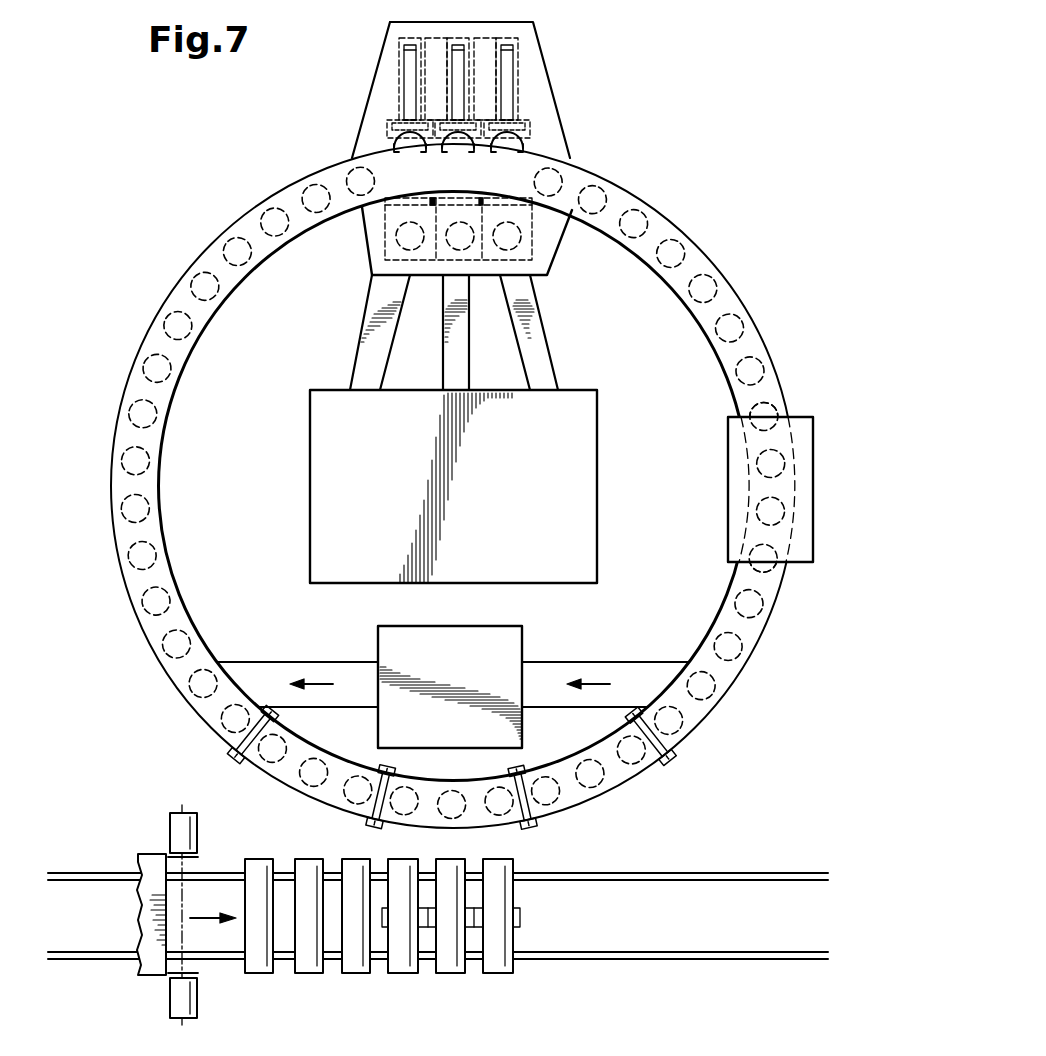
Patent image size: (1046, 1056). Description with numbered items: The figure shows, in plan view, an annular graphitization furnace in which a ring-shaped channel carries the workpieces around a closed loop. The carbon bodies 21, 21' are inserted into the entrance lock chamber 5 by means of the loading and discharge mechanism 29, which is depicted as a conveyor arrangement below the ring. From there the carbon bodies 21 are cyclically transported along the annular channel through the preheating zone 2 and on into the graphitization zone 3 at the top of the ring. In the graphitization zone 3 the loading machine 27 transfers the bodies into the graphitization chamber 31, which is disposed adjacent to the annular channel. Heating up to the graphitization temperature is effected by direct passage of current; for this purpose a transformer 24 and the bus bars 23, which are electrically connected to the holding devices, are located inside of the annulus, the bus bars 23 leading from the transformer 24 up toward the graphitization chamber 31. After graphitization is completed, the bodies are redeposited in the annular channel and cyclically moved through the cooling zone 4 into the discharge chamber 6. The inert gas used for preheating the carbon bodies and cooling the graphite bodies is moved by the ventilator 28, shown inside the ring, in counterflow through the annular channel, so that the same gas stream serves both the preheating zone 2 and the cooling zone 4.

The preheating zone 2 is at (752, 388).
The graphitization zone 3 is at (553, 218).
The cooling zone 4 is at (135, 528).
The entrance lock chamber 5 is at (612, 770).
The discharge chamber 6 is at (292, 763).
The carbon bodies 21 is at (452, 510).
The carbon bodies 21' is at (218, 237).
The bus bars 23 is at (537, 338).
The transformer 24 is at (578, 443).
The loading machine 27 is at (522, 133).
The ventilator 28 is at (512, 638).
The loading and discharge mechanism 29 is at (498, 958).
The graphitization chamber 31 is at (392, 226).